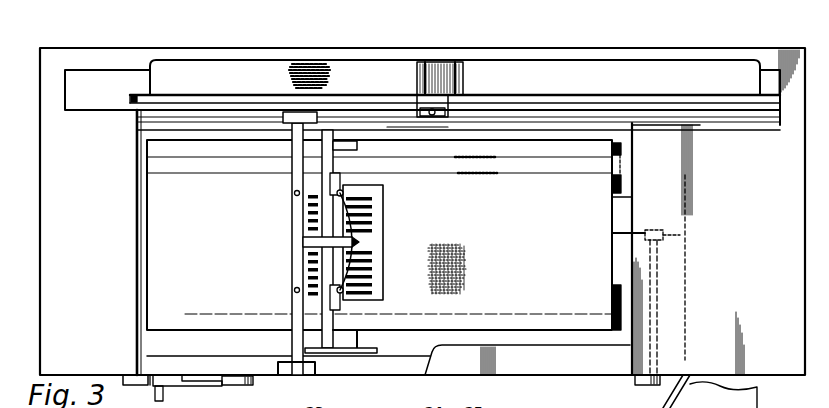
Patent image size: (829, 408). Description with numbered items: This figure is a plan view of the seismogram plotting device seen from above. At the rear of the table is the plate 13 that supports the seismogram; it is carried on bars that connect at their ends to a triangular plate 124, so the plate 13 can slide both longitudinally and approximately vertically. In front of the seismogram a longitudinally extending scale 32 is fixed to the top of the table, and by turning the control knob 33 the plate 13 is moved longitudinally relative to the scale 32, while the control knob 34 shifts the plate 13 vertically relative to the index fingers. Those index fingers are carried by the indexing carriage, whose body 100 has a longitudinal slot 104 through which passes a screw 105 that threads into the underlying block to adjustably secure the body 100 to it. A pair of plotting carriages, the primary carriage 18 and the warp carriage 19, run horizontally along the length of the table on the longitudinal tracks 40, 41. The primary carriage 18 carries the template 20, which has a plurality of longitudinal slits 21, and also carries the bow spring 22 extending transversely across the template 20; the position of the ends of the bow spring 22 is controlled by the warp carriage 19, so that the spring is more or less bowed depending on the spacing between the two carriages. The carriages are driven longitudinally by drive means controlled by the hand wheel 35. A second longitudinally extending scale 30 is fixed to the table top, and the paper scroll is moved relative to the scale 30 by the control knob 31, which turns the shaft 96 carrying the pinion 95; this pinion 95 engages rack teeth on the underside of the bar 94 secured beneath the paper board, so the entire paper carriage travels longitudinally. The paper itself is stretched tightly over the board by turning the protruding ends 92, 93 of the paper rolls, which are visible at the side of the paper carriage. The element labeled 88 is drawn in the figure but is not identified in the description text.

The plate 13 is at (182, 70).
The primary carriage 18 is at (297, 178).
The warp carriage 19 is at (333, 168).
The template 20 is at (381, 198).
The longitudinal slits 21 is at (366, 294).
The bow spring 22 is at (356, 219).
The longitudinally extending scale 30 is at (515, 168).
The control knob 31 is at (640, 381).
The longitudinally extending scale 32 is at (143, 97).
The control knob 33 is at (233, 379).
The control knob 34 is at (140, 379).
The hand wheel 35 is at (182, 379).
The longitudinal track 40 is at (395, 352).
The longitudinal track 41 is at (262, 122).
The channel member 88 is at (623, 210).
The protruding end of paper roll 92 is at (608, 188).
The protruding end of paper roll 93 is at (617, 288).
The bar 94 is at (623, 238).
The pinion 95 is at (657, 241).
The shaft 96 is at (653, 295).
The body 100 is at (450, 115).
The longitudinal slot 104 is at (423, 117).
The screw 105 is at (387, 127).
The triangular plate 124 is at (757, 400).